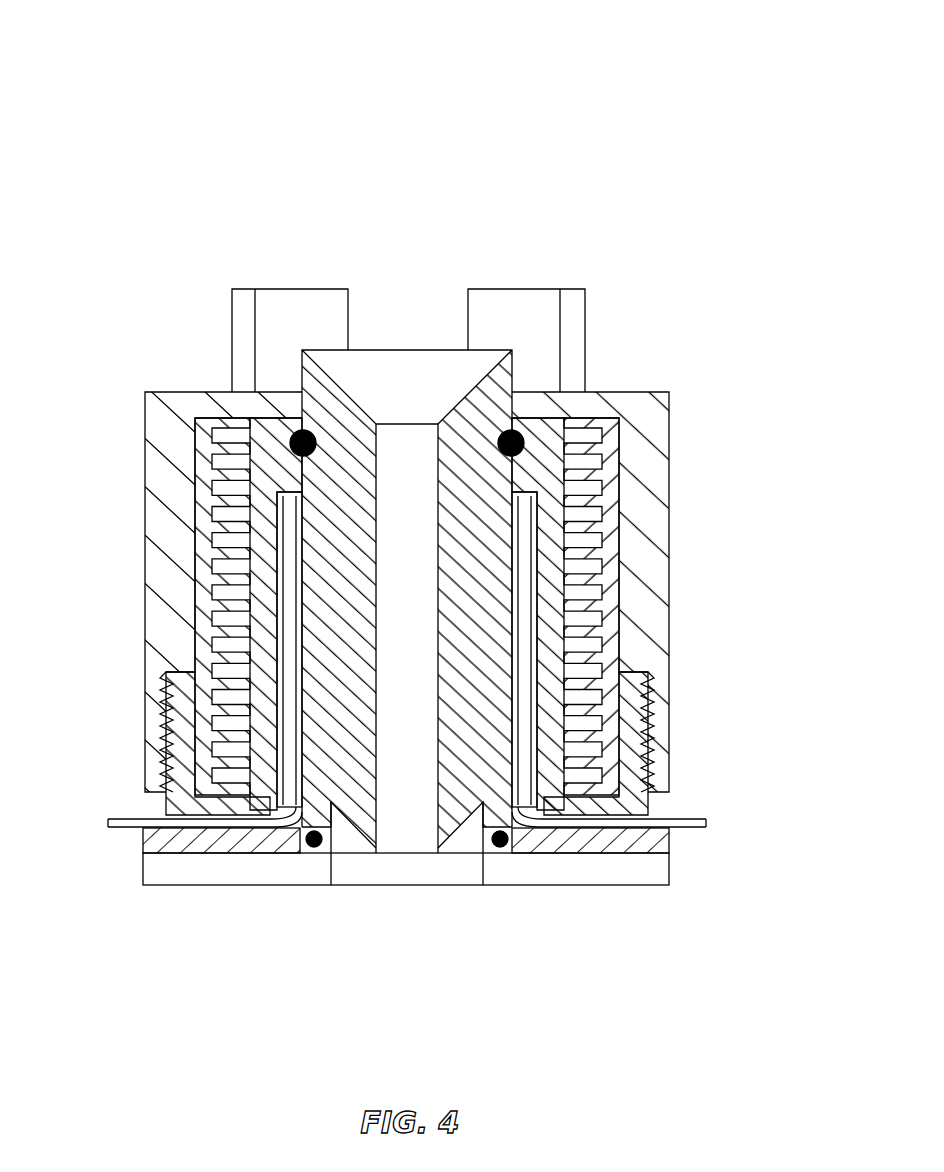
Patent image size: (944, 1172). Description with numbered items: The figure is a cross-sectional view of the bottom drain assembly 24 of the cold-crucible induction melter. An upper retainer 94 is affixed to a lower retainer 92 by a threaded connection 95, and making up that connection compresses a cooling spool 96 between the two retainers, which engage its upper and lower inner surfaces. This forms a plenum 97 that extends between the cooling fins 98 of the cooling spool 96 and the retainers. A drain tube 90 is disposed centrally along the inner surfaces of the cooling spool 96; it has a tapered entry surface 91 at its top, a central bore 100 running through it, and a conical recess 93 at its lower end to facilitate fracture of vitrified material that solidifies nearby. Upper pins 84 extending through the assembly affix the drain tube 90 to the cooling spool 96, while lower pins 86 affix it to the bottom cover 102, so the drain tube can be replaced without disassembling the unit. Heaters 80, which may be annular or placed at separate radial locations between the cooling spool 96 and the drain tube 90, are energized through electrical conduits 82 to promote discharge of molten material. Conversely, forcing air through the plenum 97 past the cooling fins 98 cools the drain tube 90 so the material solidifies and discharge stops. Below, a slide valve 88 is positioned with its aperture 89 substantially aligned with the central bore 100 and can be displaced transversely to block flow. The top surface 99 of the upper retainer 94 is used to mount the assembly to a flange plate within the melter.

The bottom drain assembly 24 is at (699, 131).
The heater 80 is at (277, 510).
The electrical conduit 82 is at (706, 824).
The upper pin 84 is at (294, 436).
The lower pin 86 is at (494, 846).
The slide valve 88 is at (672, 880).
The aperture 89 is at (449, 873).
The drain tube 90 is at (512, 378).
The tapered entry surface 91 is at (420, 385).
The lower retainer 92 is at (648, 806).
The conical recess 93 is at (343, 838).
The upper retainer 94 is at (678, 552).
The threaded connection 95 is at (653, 712).
The cooling spool 96 is at (548, 450).
The plenum 97 is at (598, 512).
The cooling fins 98 is at (600, 465).
The top surface 99 is at (172, 393).
The central bore 100 is at (400, 748).
The bottom cover 102 is at (222, 845).